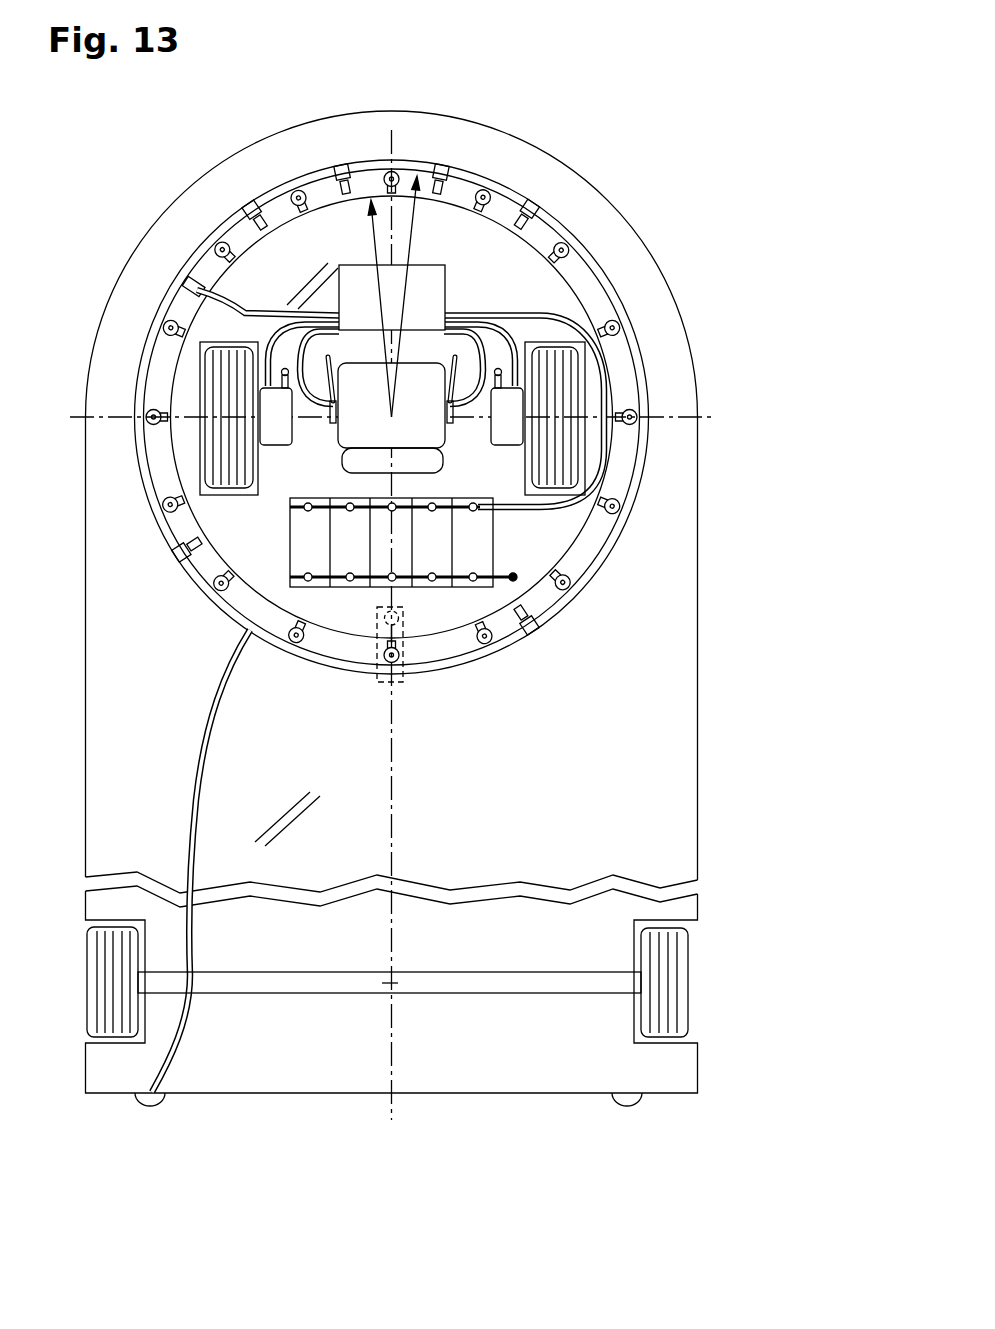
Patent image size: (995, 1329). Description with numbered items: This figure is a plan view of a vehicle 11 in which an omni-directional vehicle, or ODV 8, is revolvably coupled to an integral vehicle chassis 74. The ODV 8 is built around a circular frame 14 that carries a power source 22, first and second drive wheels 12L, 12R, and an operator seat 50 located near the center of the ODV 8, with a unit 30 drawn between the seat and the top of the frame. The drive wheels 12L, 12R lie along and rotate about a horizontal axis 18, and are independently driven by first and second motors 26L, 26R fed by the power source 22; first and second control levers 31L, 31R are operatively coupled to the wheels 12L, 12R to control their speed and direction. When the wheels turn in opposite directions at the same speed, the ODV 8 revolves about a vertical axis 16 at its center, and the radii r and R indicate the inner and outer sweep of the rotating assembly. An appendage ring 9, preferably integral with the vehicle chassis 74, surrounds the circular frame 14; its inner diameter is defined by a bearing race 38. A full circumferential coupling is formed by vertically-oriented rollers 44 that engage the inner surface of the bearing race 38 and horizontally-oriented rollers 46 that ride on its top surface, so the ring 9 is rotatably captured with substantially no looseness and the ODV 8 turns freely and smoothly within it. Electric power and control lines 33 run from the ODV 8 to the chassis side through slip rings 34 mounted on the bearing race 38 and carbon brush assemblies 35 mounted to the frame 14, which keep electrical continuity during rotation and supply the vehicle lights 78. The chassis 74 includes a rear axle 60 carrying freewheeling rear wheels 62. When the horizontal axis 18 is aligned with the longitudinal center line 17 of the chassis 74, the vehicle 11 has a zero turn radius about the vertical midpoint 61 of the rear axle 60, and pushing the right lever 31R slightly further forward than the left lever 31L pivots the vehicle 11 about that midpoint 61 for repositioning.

The omni-directional vehicle (ODV) 8 is at (427, 595).
The appendage ring 9 is at (573, 172).
The vehicle 11 is at (738, 834).
The first drive wheel 12L is at (232, 490).
The second drive wheel 12R is at (558, 488).
The circular frame 14 is at (607, 357).
The vertical axis 16 is at (395, 416).
The longitudinal center line 17 is at (392, 733).
The horizontal axis 18 is at (700, 418).
The power source 22 is at (497, 562).
The first motor 26L is at (275, 448).
The second motor 26R is at (510, 448).
The control unit 30 is at (447, 318).
The first control lever 31L is at (334, 357).
The second control lever 31R is at (455, 357).
The electric power and control lines 33 is at (243, 300).
The slip rings 34 is at (168, 353).
The carbon brush assemblies 35 is at (190, 282).
The bearing race 38 is at (507, 645).
The vertically-oriented rollers 44 is at (303, 643).
The horizontally-oriented rollers 46 is at (530, 627).
The operator seat 50 is at (388, 403).
The rear axle 60 is at (478, 1000).
The vertical midpoint of the rear axle 61 is at (390, 983).
The rear wheels 62 is at (87, 978).
The vehicle chassis 74 is at (698, 762).
The vehicle lights 78 is at (152, 1100).
The inner radius r is at (372, 253).
The outer radius R is at (411, 257).